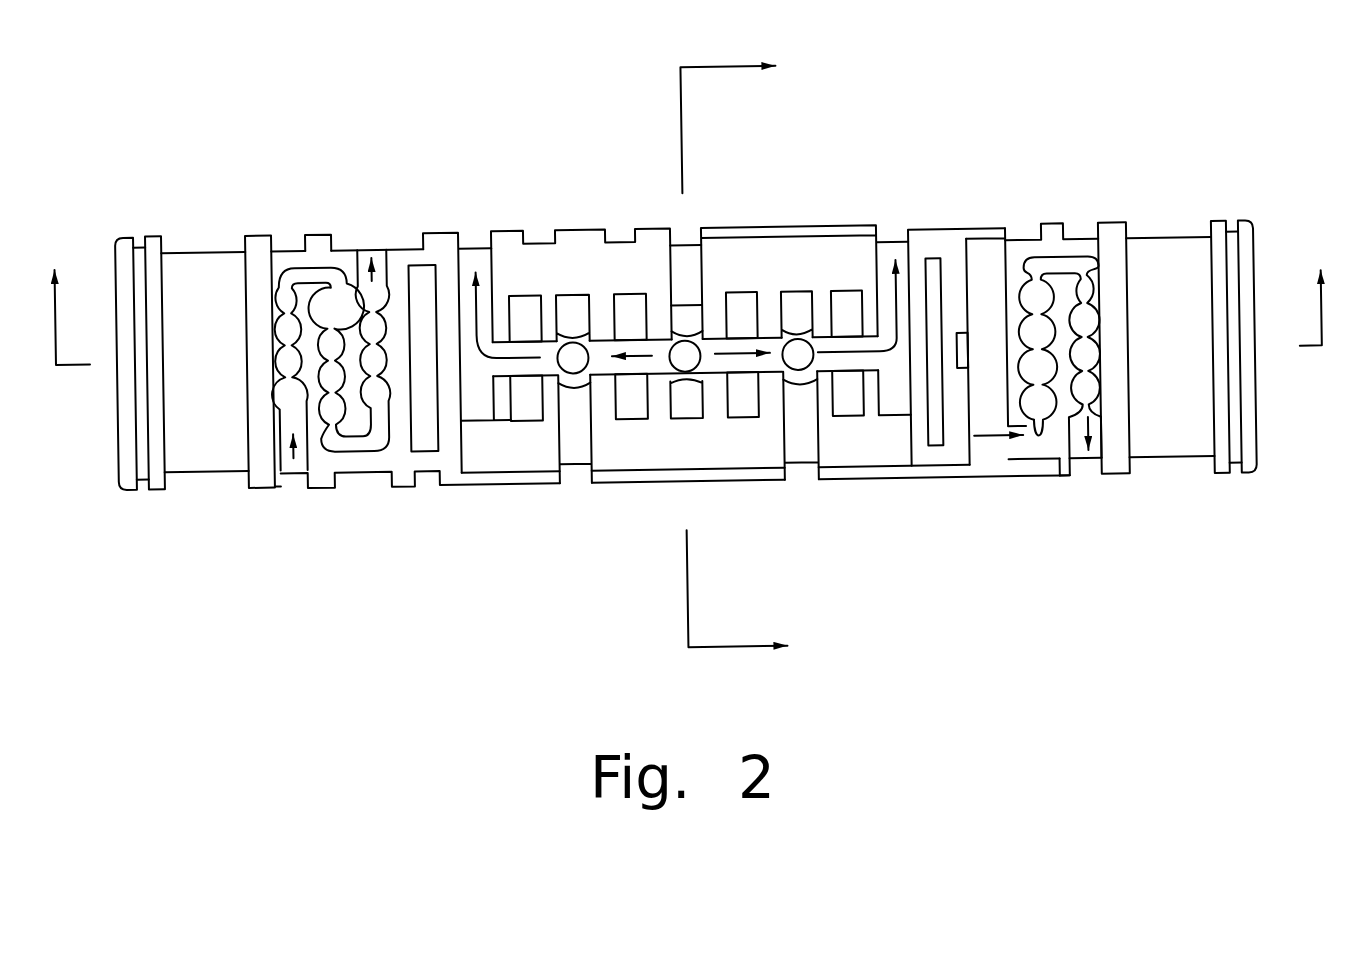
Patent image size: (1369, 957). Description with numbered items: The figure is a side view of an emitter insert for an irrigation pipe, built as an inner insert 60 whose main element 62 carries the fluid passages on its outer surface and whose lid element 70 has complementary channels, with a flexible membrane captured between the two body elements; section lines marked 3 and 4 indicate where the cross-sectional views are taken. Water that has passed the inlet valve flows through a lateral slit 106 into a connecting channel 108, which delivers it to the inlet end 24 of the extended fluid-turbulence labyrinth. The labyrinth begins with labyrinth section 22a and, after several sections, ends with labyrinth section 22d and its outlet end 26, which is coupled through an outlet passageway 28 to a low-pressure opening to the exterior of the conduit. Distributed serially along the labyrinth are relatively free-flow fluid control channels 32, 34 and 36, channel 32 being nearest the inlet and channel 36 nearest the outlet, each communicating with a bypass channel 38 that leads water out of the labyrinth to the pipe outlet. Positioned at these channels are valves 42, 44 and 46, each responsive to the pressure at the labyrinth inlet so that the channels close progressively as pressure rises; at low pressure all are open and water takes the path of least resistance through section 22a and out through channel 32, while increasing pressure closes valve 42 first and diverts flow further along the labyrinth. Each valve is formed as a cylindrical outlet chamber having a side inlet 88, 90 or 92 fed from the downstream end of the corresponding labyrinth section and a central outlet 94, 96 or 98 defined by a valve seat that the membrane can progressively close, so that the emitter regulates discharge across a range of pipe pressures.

The section line 3- 3 is at (692, 321).
The section line 4- 4 is at (731, 354).
The labyrinth section 22a is at (1067, 276).
The labyrinth section 22d is at (320, 284).
The inlet end 24 is at (1035, 450).
The outlet end 26 is at (383, 262).
The outlet passageway 28 is at (222, 436).
The fluid control channel 32 is at (797, 467).
The fluid control channel 34 is at (697, 269).
The fluid control channel 36 is at (580, 473).
The bypass channel 38 is at (474, 246).
The valve 42 is at (795, 341).
The valve 44 is at (695, 341).
The valve 46 is at (573, 339).
The inner insert 60 is at (993, 492).
The main element 62 is at (1058, 482).
The lid element 70 is at (922, 469).
The side inlet 88 is at (797, 399).
The side inlet 90 is at (677, 329).
The side inlet 92 is at (575, 397).
The central outlet 94 is at (793, 369).
The central outlet 96 is at (683, 371).
The central outlet 98 is at (567, 367).
The lateral slit 106 is at (965, 363).
The connecting channel 108 is at (993, 296).